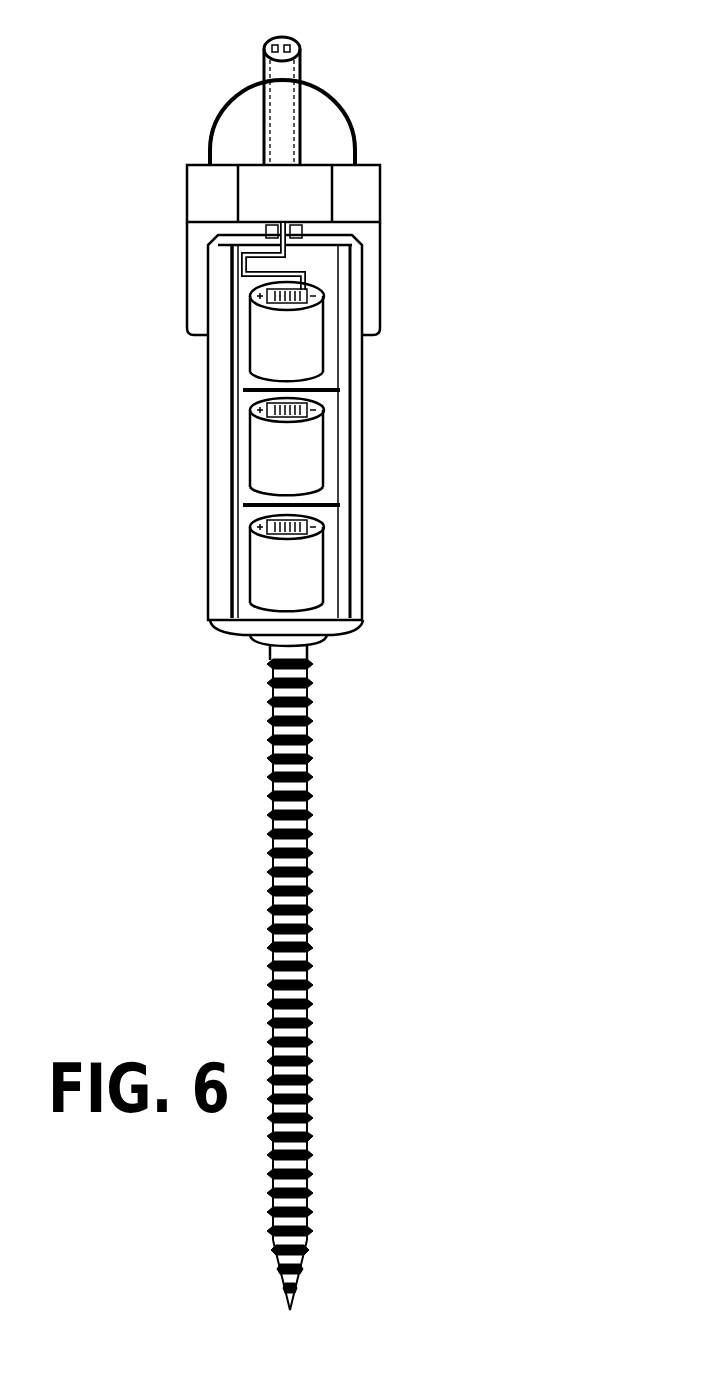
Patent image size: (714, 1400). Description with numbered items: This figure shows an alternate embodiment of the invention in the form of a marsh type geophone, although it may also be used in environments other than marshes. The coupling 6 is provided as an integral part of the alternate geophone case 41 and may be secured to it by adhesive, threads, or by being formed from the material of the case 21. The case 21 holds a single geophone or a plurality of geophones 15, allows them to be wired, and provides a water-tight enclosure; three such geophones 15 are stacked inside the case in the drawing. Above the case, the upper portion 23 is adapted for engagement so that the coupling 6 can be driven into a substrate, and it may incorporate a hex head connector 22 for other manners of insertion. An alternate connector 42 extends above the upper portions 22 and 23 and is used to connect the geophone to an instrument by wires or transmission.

The alternate connector 42 is at (302, 67).
The hex head connector 22 is at (207, 122).
The upper portion 23 is at (393, 192).
The case 21 is at (372, 397).
The alternate geophone case 41 is at (205, 430).
The geophone 15 is at (297, 560).
The coupling 6 is at (317, 880).